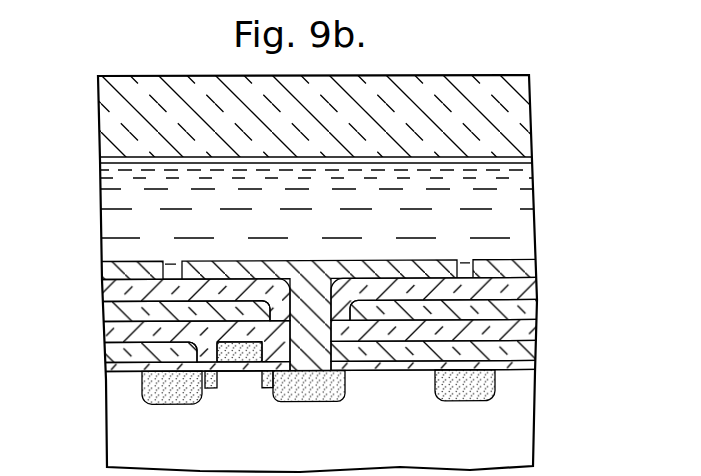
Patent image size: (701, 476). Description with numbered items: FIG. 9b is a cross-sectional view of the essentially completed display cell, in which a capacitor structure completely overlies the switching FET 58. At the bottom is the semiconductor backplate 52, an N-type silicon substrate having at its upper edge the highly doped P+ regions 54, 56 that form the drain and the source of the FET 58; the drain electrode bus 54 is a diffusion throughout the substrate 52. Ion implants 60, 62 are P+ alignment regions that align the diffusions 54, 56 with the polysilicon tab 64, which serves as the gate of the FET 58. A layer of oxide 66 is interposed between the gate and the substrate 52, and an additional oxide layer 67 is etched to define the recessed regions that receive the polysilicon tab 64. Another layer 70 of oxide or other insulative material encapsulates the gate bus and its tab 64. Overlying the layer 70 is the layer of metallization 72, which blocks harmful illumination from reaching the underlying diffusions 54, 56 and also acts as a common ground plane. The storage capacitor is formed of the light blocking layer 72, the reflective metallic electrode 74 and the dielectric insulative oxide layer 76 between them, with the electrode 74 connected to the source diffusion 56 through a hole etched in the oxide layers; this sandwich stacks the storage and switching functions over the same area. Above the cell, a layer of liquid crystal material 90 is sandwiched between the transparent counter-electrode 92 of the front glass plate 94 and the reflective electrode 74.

The semiconductor backplate 52 is at (523, 452).
The highly doped region (drain) 54 is at (153, 403).
The highly doped region (source) 56 is at (333, 401).
The switching FET 58 is at (237, 412).
The ion implant 60 is at (212, 390).
The ion implant 62 is at (265, 390).
The polysilicon tab 64 is at (255, 353).
The layer of oxide 66 is at (110, 368).
The additional oxide layer 67 is at (525, 353).
The layer of oxide or other insulative material 70 is at (113, 332).
The layer of metallization (light blocking layer) 72 is at (527, 313).
The reflective metallic electrode 74 is at (238, 272).
The dielectric insulative oxide layer 76 is at (113, 292).
The liquid crystal material 90 is at (528, 220).
The transparent counter-electrode 92 is at (515, 158).
The front glass plate 94 is at (529, 86).